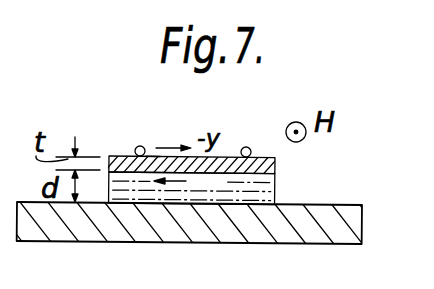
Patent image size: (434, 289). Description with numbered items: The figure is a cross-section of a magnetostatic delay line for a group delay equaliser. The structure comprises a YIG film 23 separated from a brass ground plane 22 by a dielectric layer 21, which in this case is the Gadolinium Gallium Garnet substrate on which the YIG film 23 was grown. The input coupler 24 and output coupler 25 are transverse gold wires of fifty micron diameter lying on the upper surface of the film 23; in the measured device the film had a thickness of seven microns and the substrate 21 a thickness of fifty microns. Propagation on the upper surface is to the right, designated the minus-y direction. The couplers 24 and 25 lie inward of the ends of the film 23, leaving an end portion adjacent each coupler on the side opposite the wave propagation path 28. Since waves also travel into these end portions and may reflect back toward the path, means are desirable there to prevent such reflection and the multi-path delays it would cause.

The dielectric layer 21 is at (276, 188).
The brass ground plane 22 is at (340, 239).
The YIG film 23 is at (276, 164).
The input coupler 24 is at (143, 147).
The output coupler 25 is at (250, 147).
The wave propagation path 28 is at (153, 156).